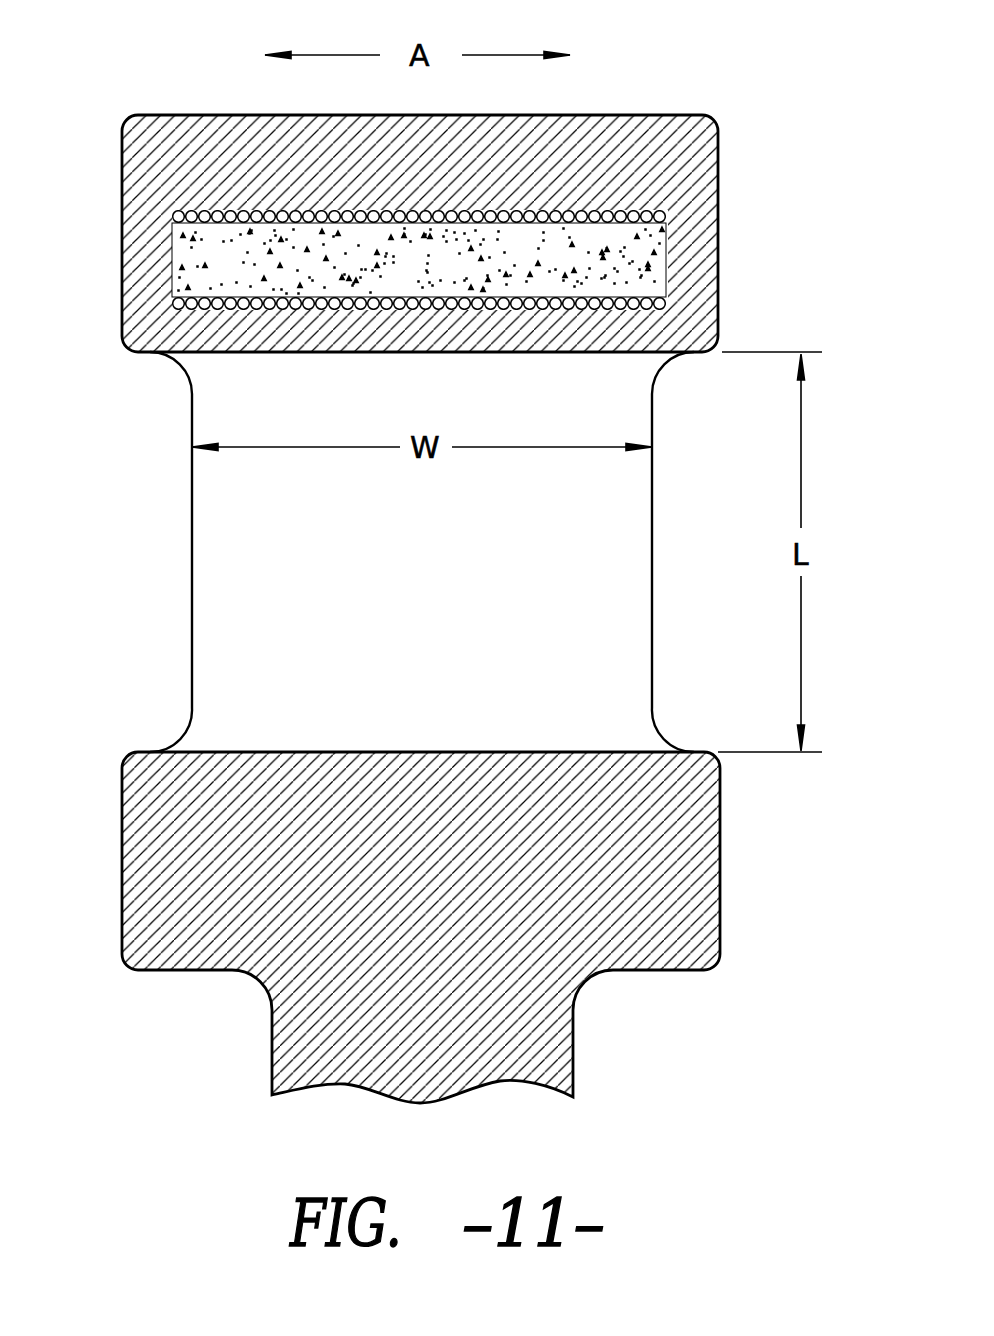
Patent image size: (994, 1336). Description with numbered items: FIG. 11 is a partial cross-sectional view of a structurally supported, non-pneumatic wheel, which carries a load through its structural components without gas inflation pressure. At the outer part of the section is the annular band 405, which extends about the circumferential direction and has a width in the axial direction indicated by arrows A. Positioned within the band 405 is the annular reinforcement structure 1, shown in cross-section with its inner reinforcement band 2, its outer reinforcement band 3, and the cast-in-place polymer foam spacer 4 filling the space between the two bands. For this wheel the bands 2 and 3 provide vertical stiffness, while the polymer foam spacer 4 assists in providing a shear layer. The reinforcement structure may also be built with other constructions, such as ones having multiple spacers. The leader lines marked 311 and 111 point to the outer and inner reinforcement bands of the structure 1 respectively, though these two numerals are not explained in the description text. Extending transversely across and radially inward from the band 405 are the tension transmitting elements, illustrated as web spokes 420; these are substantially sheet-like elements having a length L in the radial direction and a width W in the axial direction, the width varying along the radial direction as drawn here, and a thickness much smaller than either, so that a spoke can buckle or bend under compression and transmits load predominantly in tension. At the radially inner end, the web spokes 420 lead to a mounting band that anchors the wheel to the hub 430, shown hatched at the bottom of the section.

The annular reinforcement structure 1 is at (428, 243).
The inner reinforcement band 2 is at (435, 348).
The outer reinforcement band 3 is at (425, 137).
The polymer foam spacer 4 is at (667, 264).
The first current collector 311 is at (233, 210).
The second current collector 111 is at (239, 310).
The band 405 is at (153, 253).
The web spokes 420 is at (653, 529).
The hub 430 is at (721, 892).